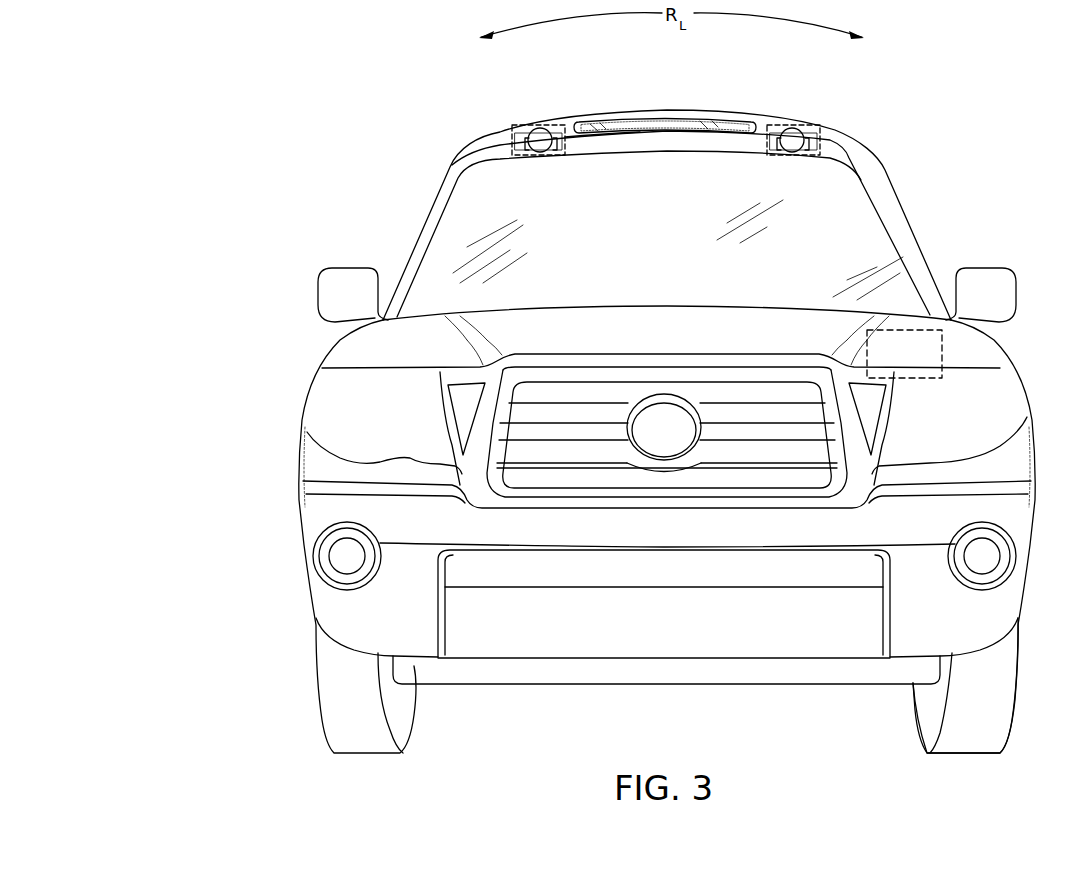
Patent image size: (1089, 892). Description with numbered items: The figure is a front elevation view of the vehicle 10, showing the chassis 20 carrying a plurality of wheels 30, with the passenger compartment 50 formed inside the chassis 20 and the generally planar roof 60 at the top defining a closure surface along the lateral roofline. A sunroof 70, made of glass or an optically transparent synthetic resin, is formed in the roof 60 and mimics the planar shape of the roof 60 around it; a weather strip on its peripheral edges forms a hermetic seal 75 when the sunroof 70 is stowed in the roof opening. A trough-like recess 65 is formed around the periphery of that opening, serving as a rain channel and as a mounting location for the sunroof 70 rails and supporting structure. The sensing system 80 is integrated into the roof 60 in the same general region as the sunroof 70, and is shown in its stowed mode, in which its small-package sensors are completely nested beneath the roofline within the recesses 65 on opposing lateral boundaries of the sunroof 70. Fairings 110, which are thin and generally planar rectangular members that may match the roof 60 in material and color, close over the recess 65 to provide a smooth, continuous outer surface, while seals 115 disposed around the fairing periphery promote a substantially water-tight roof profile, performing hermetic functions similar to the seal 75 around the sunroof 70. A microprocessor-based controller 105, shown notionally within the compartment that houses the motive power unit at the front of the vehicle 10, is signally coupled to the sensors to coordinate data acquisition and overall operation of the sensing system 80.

The vehicle 10 is at (260, 136).
The chassis 20 is at (302, 457).
The wheels 30 is at (1005, 700).
The passenger compartment 50 is at (692, 272).
The roof 60 is at (856, 146).
The recess 65 is at (524, 158).
The sunroof 70 is at (668, 118).
The seal 75 is at (610, 134).
The sensing system 80 is at (614, 88).
The controller 105 is at (943, 348).
The fairings 110 is at (777, 125).
The seals 115 is at (509, 127).